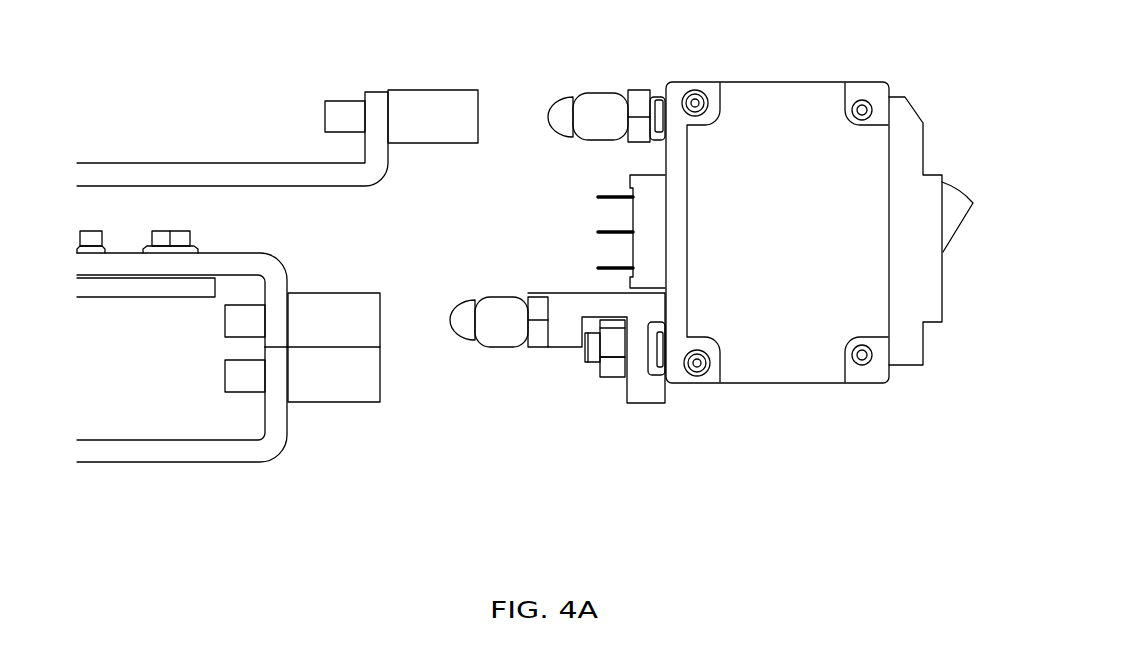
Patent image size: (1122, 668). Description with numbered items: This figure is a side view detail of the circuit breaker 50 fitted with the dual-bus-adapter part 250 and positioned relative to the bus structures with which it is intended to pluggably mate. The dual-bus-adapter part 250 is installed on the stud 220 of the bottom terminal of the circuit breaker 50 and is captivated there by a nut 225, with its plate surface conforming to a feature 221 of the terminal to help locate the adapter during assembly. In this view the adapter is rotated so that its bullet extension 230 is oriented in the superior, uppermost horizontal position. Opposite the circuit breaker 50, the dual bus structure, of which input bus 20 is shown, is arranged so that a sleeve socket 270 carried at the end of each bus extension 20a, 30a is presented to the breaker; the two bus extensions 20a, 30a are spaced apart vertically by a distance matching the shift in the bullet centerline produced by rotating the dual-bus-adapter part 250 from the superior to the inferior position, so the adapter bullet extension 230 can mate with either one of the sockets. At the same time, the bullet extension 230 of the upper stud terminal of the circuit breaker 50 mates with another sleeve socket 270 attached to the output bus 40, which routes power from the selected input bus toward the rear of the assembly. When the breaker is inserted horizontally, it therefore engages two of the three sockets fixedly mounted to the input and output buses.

The output bus 40 is at (175, 163).
The sleeve socket 270 is at (405, 92).
The bus extension 20a is at (277, 243).
The bus extension 30a is at (115, 462).
The input bus 20 is at (175, 297).
The bullet extension 230 is at (588, 108).
The feature of the terminal 221 is at (655, 95).
The dual-bus-adapter part 250 is at (555, 293).
The stud 220 is at (590, 363).
The nut 225 is at (612, 373).
The circuit breaker 50 is at (790, 253).